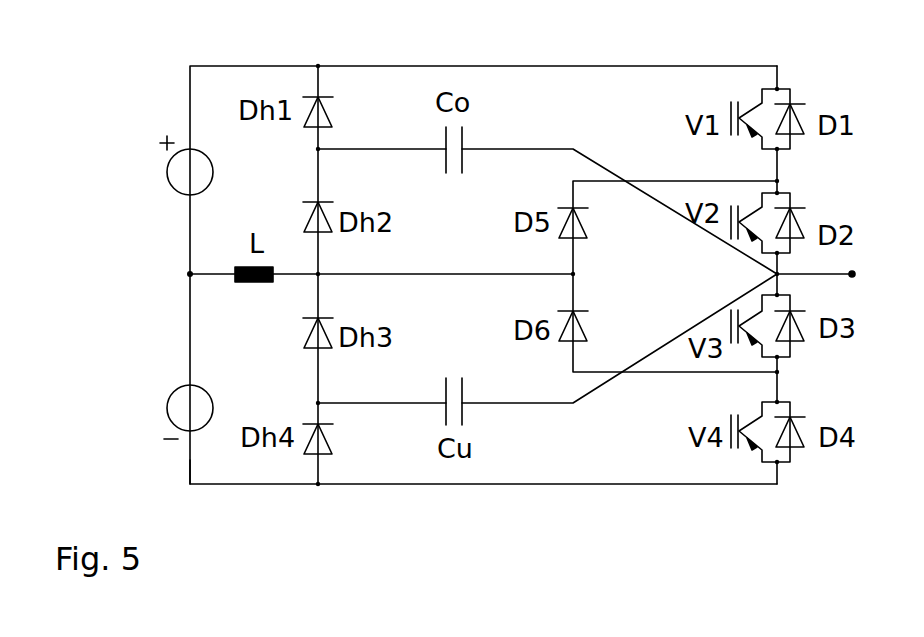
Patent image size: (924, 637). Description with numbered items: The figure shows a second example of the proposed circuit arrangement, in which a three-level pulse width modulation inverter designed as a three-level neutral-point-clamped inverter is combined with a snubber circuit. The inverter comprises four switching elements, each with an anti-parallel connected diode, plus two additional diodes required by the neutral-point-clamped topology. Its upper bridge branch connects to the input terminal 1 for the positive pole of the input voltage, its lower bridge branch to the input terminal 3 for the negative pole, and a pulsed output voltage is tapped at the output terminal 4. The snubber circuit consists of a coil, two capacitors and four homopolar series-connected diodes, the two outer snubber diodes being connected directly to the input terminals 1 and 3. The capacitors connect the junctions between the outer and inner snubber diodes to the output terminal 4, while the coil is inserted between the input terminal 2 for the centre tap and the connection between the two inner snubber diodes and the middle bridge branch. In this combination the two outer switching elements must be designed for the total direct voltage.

The input terminal for the positive pole of the input voltage 1 is at (180, 63).
The input terminal for the centre tap of the input voltage 2 is at (180, 257).
The input terminal for the negative pole of the input voltage 3 is at (180, 486).
The output terminal 4 is at (831, 273).